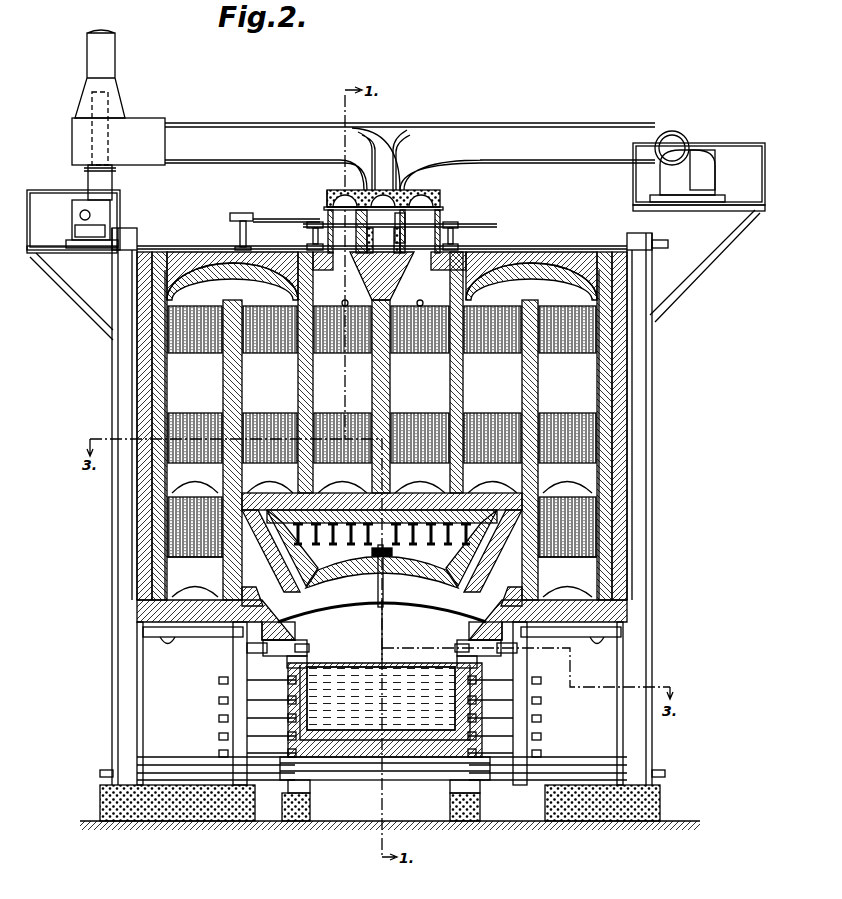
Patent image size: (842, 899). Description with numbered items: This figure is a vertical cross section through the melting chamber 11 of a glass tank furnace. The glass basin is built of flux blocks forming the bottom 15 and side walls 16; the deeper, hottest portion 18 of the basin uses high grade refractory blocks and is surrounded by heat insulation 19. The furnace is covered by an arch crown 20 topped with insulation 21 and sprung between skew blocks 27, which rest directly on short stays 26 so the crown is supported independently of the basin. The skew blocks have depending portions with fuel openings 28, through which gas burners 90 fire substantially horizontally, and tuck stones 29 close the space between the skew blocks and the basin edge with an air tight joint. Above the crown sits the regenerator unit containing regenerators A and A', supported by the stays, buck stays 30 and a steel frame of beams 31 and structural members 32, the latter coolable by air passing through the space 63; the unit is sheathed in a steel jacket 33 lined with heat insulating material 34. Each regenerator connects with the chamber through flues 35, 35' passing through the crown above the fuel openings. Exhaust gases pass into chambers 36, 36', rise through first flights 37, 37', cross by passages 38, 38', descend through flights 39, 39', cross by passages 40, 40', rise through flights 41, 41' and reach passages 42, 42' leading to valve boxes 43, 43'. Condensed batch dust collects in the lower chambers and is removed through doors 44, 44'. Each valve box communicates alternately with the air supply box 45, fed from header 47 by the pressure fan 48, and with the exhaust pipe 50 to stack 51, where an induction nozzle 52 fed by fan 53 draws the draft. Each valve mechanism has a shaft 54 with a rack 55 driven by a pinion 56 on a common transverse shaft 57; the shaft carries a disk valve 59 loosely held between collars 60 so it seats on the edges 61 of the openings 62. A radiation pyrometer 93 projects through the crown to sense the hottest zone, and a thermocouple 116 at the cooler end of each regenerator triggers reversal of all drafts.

The melting chamber 11 is at (396, 630).
The bottom 15 is at (412, 760).
The side walls 16 is at (335, 665).
The portion of the glass containing basin 18 is at (348, 740).
The heat insulation 19 is at (445, 770).
The crown 20 is at (388, 605).
The insulation 21 is at (425, 540).
The stays 26 is at (237, 697).
The skew blocks 27 is at (292, 632).
The fuel openings 28 is at (300, 640).
The tuck stones 29 is at (307, 657).
The buck stays 30 is at (653, 445).
The beams 31 is at (170, 640).
The structural members 32 is at (340, 540).
The steel jacket 33 is at (612, 500).
The heat insulating material 34 is at (150, 403).
The flue 35 is at (493, 558).
The flue 35' is at (271, 558).
The chamber 36 is at (616, 570).
The chamber 36' is at (145, 577).
The flight 37 is at (647, 435).
The flight 37' is at (115, 435).
The cross passage 38 is at (531, 254).
The cross passage 38' is at (232, 256).
The flight 39 is at (492, 384).
The flight 39' is at (270, 384).
The cross passage 40 is at (493, 476).
The cross passage 40' is at (269, 476).
The flight 41 is at (420, 384).
The flight 41' is at (342, 384).
The passage 42 is at (531, 256).
The passage 42' is at (232, 281).
The valve box 43 is at (405, 196).
The valve box 43' is at (313, 190).
The door 44 is at (583, 608).
The door 44' is at (178, 619).
The box 45 is at (392, 125).
The header 47 is at (676, 138).
The pressure supplying fan 48 is at (705, 160).
The pipe 50 is at (190, 137).
The stack 51 is at (108, 57).
The induction nozzle 52 is at (110, 103).
The fan 53 is at (80, 210).
The shaft 54 is at (470, 225).
The rack 55 is at (290, 219).
The pinion 56 is at (308, 222).
The transverse shaft 57 is at (238, 214).
The disk valve 59 is at (405, 175).
The collars 60 is at (383, 240).
The edges 61 is at (376, 190).
The openings 62 is at (338, 208).
The space 63 is at (470, 570).
The burners 90 is at (247, 647).
The radiation pyrometer 93 is at (378, 608).
The thermocouple 116 is at (340, 303).
The regenerator A is at (615, 431).
The regenerator A' is at (145, 431).